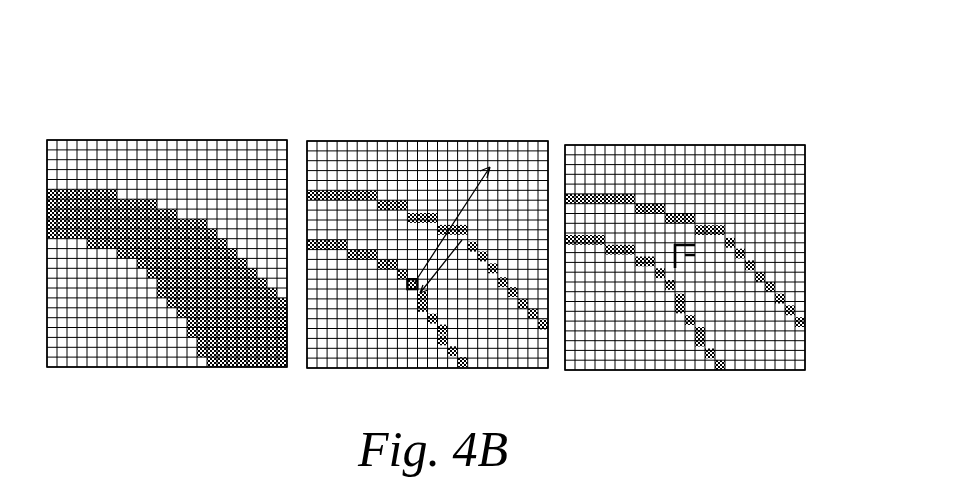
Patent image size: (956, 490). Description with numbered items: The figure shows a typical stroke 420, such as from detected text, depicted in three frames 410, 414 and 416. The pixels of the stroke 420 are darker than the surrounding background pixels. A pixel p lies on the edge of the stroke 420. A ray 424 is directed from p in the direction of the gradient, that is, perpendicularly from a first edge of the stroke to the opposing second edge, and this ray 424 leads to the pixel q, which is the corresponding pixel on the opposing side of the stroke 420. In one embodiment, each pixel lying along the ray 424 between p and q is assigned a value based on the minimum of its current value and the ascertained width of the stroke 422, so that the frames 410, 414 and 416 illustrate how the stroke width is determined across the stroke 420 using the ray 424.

The frame 410 is at (188, 63).
The frame 414 is at (420, 64).
The frame 416 is at (661, 64).
The stroke 420 is at (178, 210).
The width of the stroke 422 is at (452, 262).
The ray 424 is at (472, 180).